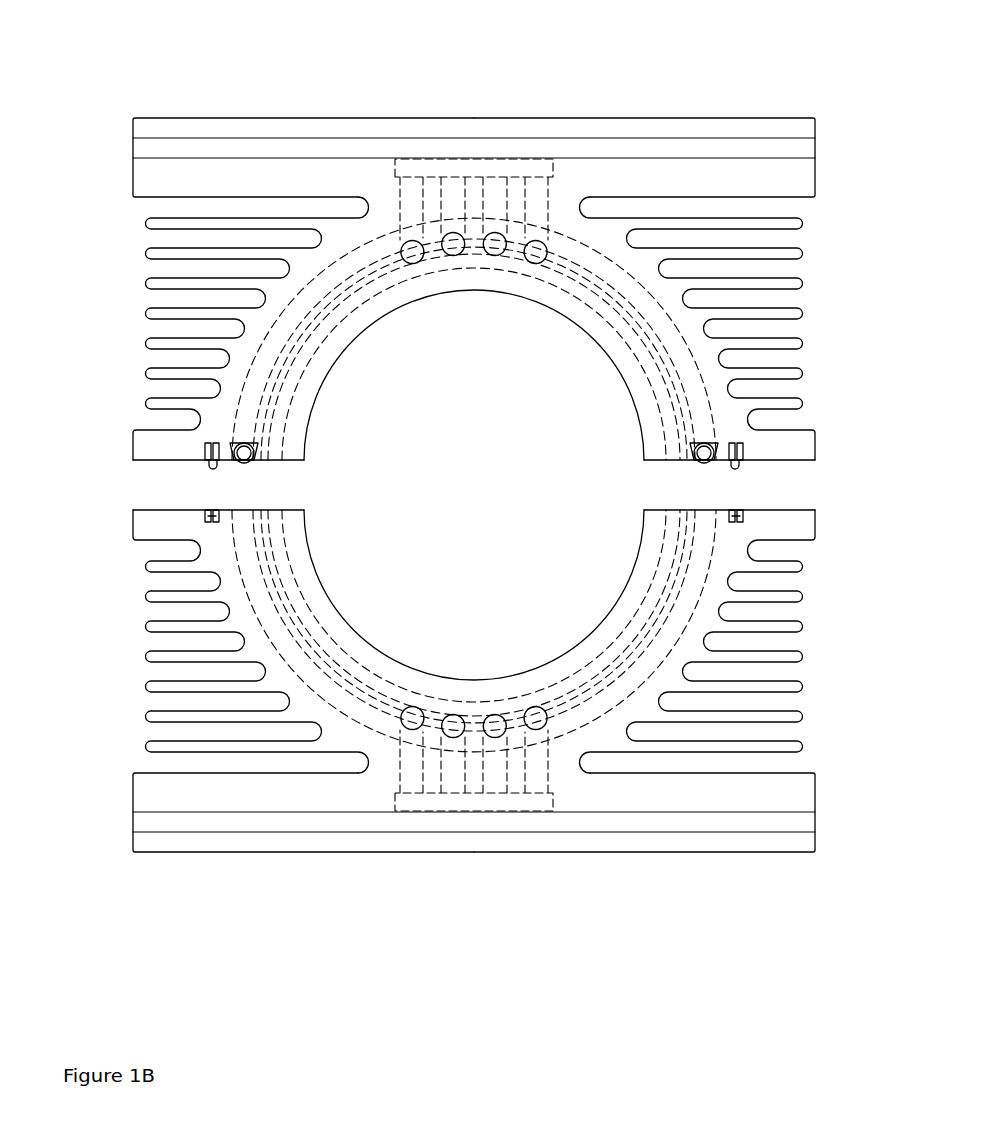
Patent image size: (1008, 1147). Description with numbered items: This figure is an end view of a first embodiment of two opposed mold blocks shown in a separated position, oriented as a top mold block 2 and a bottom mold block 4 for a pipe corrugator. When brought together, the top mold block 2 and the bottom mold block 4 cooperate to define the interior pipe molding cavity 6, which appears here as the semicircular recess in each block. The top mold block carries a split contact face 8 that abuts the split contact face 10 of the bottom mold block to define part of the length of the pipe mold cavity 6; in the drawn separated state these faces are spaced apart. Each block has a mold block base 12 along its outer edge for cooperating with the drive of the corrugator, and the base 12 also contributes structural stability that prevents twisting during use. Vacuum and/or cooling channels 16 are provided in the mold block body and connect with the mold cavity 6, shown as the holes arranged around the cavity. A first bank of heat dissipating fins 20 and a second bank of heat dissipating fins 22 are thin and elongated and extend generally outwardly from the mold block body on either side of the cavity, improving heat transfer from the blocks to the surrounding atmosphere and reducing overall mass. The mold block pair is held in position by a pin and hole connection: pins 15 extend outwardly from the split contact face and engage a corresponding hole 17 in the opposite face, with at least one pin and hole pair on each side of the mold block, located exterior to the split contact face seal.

The top mold block 2 is at (852, 105).
The bottom mold block 4 is at (838, 885).
The interior pipe molding cavity 6 is at (568, 505).
The split contact face 8 is at (150, 460).
The split contact face 10 is at (778, 510).
The mold block base 12 is at (145, 168).
The pins 15 is at (742, 462).
The vacuum and/or cooling channels 16 is at (536, 251).
The corresponding hole 17 is at (742, 520).
The first bank of heat dissipating fins 20 is at (120, 312).
The second bank of heat dissipating fins 22 is at (843, 250).